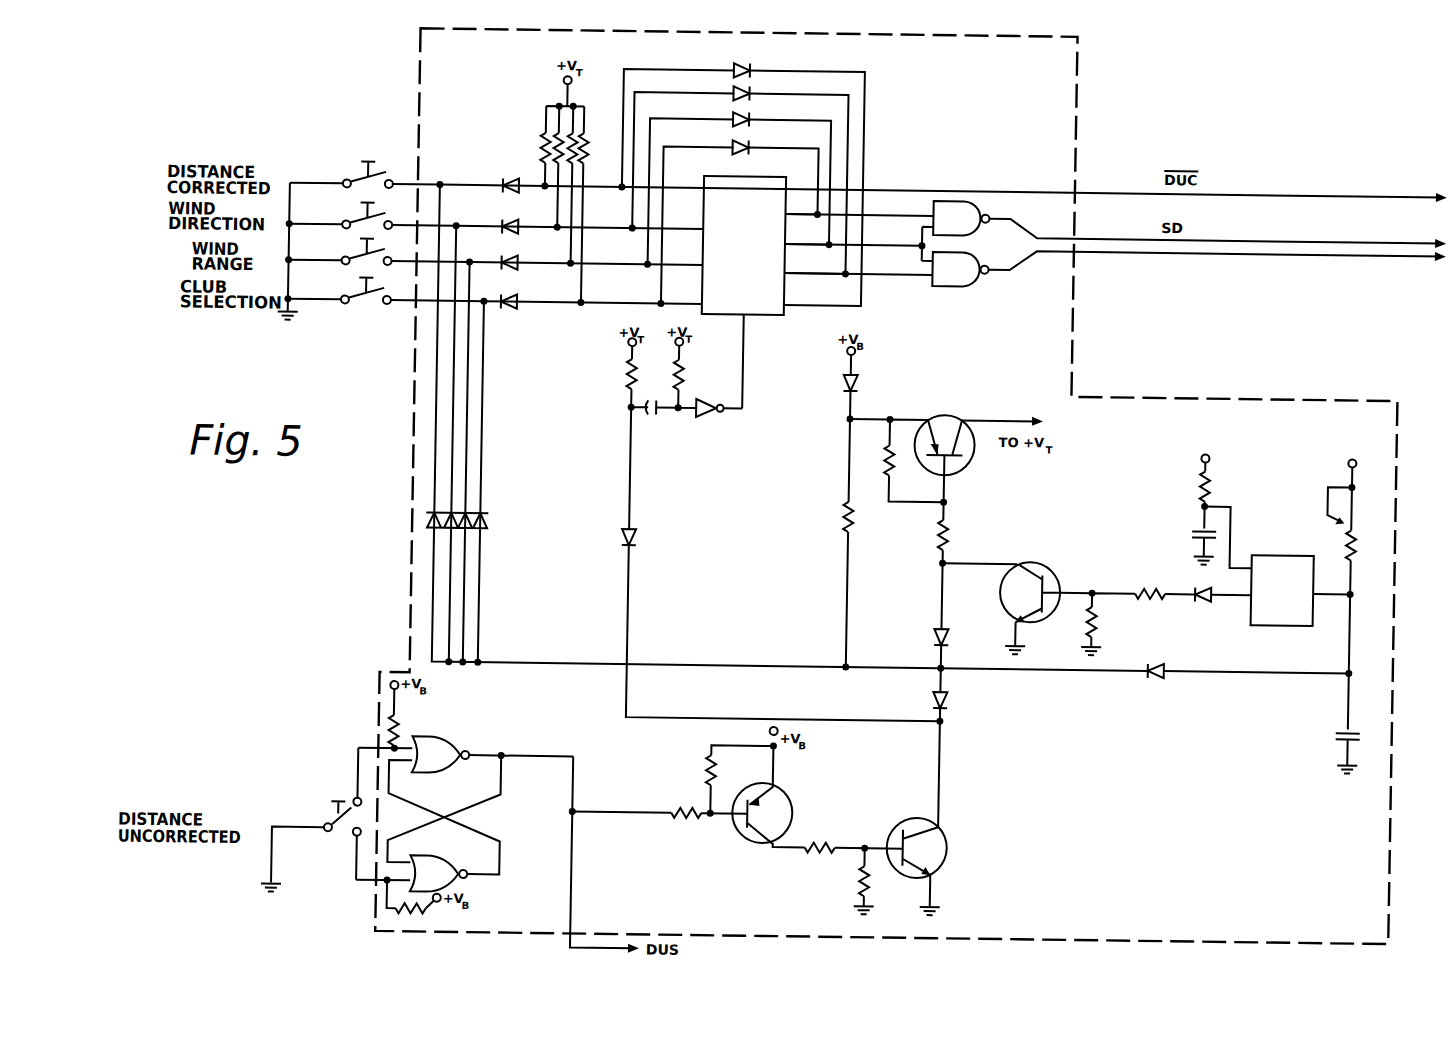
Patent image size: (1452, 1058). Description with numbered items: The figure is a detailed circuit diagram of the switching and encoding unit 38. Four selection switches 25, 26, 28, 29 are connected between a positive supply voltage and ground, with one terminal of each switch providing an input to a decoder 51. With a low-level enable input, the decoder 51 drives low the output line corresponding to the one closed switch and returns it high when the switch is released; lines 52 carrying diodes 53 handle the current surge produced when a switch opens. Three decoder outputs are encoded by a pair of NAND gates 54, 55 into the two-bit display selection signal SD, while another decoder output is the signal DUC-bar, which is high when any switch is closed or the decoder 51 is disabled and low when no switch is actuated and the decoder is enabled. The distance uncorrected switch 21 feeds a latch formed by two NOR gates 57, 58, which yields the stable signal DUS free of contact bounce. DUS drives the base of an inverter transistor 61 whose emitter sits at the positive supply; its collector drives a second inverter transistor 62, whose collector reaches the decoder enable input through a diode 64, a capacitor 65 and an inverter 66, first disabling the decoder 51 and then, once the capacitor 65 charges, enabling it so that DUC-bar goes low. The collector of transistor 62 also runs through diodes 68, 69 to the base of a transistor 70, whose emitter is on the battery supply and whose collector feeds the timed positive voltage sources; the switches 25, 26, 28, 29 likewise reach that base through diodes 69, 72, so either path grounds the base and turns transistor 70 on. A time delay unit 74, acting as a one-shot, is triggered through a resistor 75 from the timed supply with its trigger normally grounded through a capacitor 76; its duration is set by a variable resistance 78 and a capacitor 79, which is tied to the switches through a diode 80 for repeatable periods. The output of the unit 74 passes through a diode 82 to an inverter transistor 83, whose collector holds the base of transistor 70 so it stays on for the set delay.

The distance uncorrected switch 21 is at (341, 805).
The switch 25 is at (353, 259).
The switch 26 is at (355, 222).
The switch 28 is at (357, 177).
The switch 29 is at (353, 299).
The switching and encoding unit 38 is at (409, 579).
The decoder 51 is at (768, 315).
The lines 52 is at (683, 147).
The diodes 53 is at (752, 149).
The NAND gate 54 is at (992, 205).
The NAND gate 55 is at (973, 283).
The NOR gate 57 is at (452, 739).
The NOR gate 58 is at (442, 862).
The inverter transistor 61 is at (802, 811).
The inverter transistor 62 is at (957, 845).
The diode 64 is at (649, 546).
The capacitor 65 is at (657, 416).
The inverter 66 is at (712, 416).
The diode 68 is at (956, 698).
The diode 69 is at (938, 635).
The transistor 70 is at (942, 411).
The diodes 72 is at (499, 523).
The time delay unit 74 is at (1291, 618).
The resistor 75 is at (1198, 474).
The capacitor 76 is at (1193, 527).
The variable resistance 78 is at (1354, 508).
The capacitor 79 is at (1343, 730).
The diode 80 is at (1174, 675).
The diode 82 is at (1208, 598).
The inverter transistor 83 is at (1063, 575).